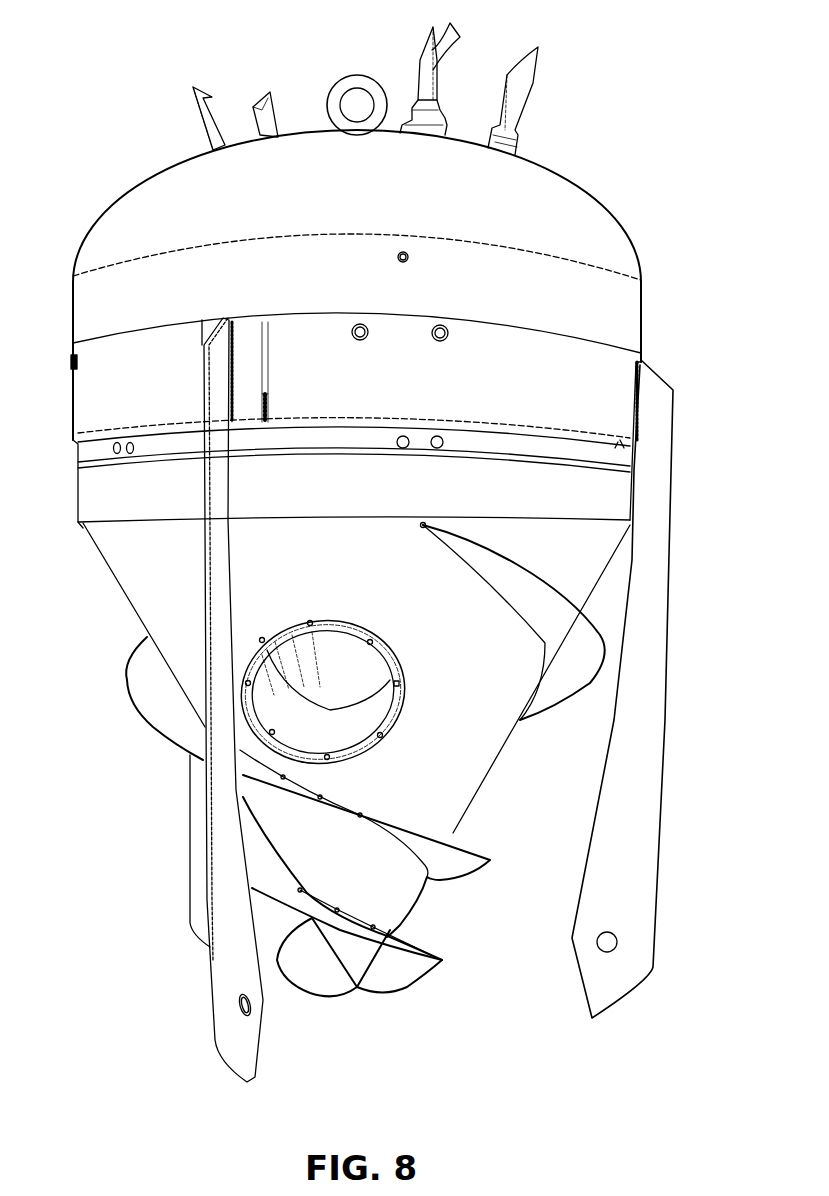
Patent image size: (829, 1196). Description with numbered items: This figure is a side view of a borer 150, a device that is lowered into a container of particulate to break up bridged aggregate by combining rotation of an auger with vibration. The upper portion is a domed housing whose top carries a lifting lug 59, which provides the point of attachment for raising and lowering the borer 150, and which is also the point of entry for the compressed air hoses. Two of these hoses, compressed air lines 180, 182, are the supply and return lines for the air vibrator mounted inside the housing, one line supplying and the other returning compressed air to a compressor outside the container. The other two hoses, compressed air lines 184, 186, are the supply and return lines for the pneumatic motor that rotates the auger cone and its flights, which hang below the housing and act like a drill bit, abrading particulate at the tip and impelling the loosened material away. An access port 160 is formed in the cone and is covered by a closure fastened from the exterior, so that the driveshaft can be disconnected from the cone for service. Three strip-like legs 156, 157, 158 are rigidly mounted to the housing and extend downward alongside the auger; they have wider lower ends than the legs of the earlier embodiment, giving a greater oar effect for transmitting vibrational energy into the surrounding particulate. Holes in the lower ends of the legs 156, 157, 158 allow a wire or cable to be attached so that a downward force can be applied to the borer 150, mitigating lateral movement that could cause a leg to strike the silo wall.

The borer 150 is at (384, 549).
The lifting lug 59 is at (352, 76).
The leg 156 is at (227, 983).
The leg 157 is at (640, 838).
The leg 158 is at (198, 905).
The access port 160 is at (253, 670).
The compressed air line 180 is at (198, 92).
The compressed air line 182 is at (255, 100).
The compressed air line 184 is at (435, 47).
The compressed air line 186 is at (535, 83).